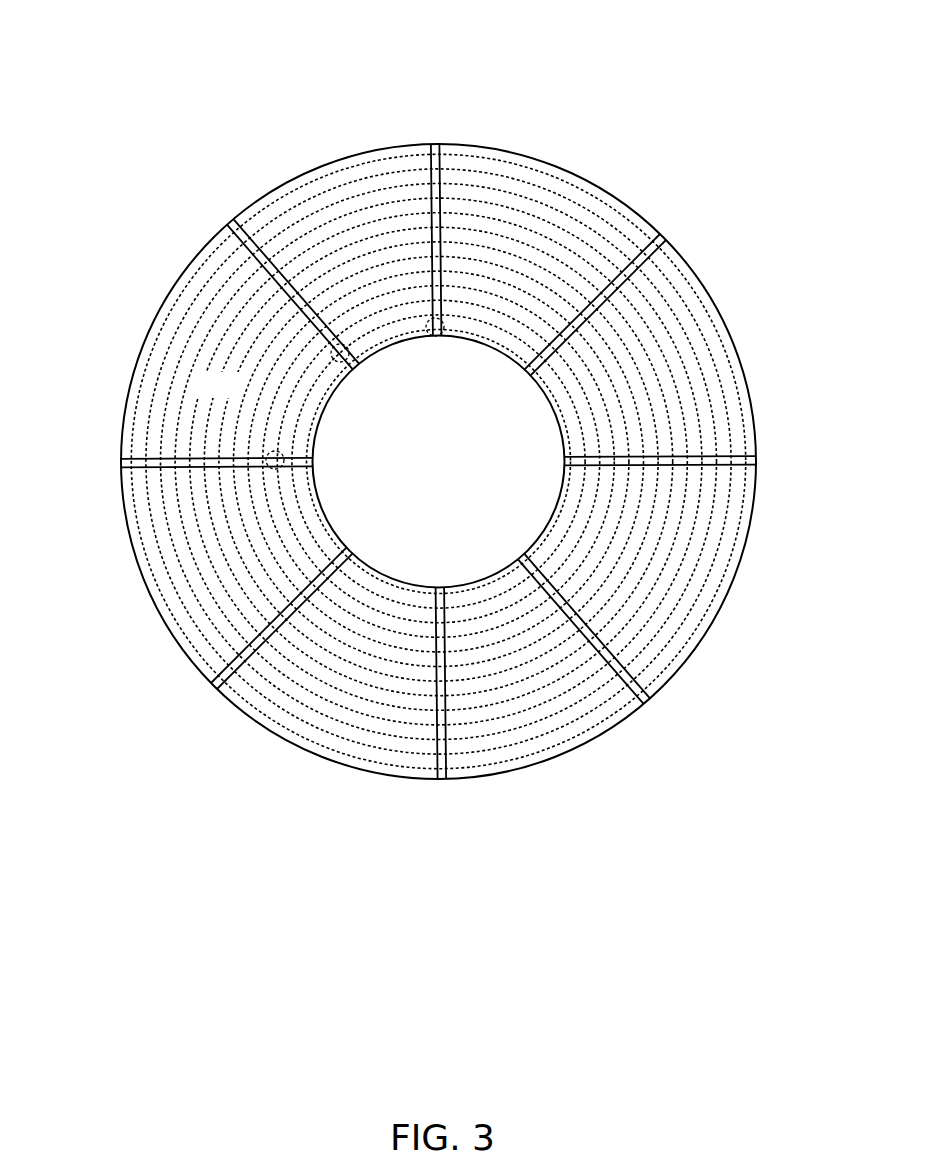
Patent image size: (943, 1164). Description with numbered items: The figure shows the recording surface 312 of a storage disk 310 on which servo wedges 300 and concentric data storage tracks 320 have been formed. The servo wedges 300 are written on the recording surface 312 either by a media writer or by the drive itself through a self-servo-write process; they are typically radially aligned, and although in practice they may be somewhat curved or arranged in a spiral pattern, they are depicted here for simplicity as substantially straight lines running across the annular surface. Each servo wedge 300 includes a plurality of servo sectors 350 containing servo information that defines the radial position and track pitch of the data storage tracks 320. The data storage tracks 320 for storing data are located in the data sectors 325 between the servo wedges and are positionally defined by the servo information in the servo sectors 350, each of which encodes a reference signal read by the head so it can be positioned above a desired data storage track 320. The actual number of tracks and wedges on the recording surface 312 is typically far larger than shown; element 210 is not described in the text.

The storage disk 310 is at (157, 62).
The disk 210 is at (212, 232).
The servo wedges 300 is at (433, 132).
The recording surface 312 is at (237, 396).
The concentric data storage tracks 320 is at (692, 285).
The data sectors 325 is at (112, 473).
The servo sectors 350 is at (437, 338).